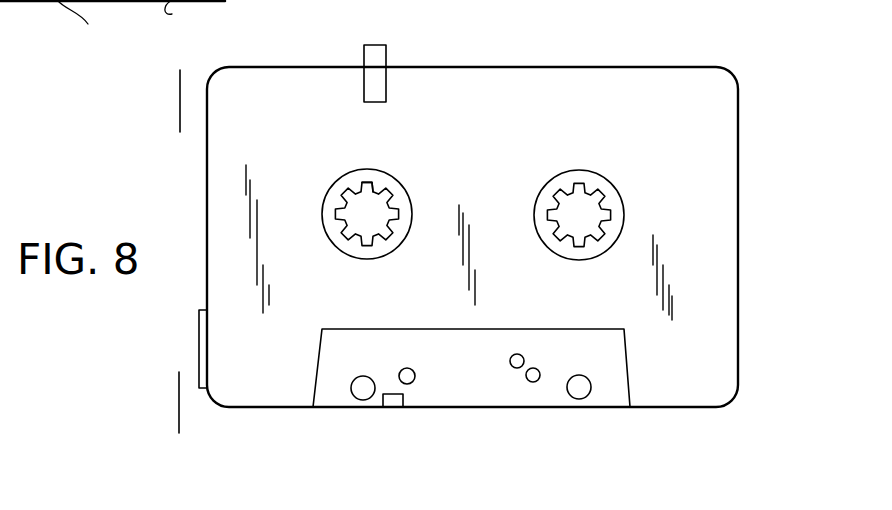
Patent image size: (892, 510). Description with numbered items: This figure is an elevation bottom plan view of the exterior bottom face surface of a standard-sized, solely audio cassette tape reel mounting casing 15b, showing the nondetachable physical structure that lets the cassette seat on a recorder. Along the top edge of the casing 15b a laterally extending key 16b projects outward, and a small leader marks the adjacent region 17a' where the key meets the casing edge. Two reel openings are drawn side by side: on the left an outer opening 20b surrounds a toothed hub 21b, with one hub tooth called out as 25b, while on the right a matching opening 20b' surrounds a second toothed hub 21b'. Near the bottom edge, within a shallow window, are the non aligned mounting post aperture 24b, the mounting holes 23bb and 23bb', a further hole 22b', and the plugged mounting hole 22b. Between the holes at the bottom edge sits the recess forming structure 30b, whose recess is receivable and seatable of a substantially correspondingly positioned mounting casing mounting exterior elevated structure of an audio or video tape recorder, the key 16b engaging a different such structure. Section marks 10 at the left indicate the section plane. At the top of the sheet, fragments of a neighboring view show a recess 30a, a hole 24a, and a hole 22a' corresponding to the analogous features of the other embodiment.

In FIG. 8, the standard-sized casing 15b is at (488, 58).
In FIG. 8, the laterally extending key 16b is at (387, 62).
In FIG. 8, the tab recess 17a' is at (338, 47).
In FIG. 8, the hub opening 20b is at (371, 232).
In FIG. 8, the hub 21b is at (407, 193).
In FIG. 8, the hub tooth 25b is at (361, 189).
In FIG. 8, the hub opening 20b' is at (619, 215).
In FIG. 8, the hub 21b' is at (611, 191).
In FIG. 8, the non aligned mounting post aperture 24b is at (517, 356).
In FIG. 8, the mounting hole 23bb is at (616, 361).
In FIG. 8, the mounting hole 23bb' is at (461, 404).
In FIG. 8, the hole 22b' is at (332, 420).
In FIG. 8, the mounting hole with removable plug 22b is at (611, 412).
In FIG. 8, the recess forming structure 30b is at (392, 402).
In FIG. 8, the section line 10 is at (176, 81).
The notch 30a is at (97, 22).
The hole 24a is at (190, 22).
The hole 22a' is at (26, 20).